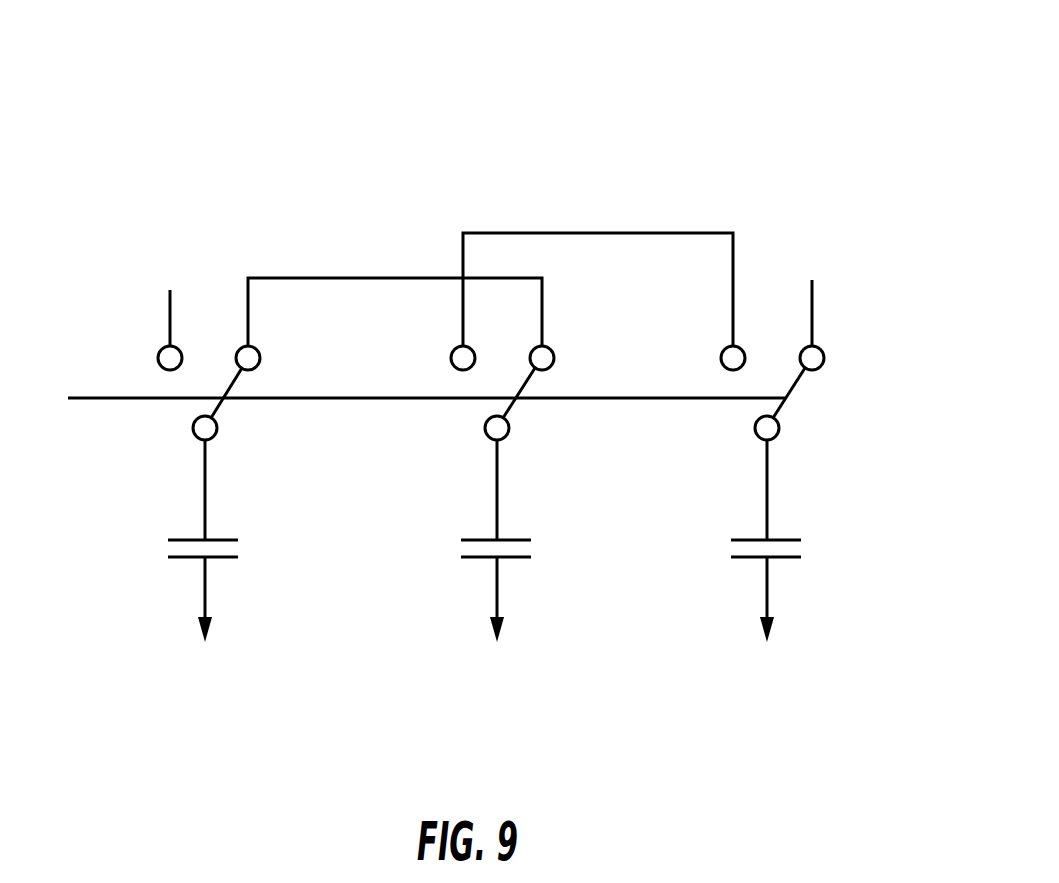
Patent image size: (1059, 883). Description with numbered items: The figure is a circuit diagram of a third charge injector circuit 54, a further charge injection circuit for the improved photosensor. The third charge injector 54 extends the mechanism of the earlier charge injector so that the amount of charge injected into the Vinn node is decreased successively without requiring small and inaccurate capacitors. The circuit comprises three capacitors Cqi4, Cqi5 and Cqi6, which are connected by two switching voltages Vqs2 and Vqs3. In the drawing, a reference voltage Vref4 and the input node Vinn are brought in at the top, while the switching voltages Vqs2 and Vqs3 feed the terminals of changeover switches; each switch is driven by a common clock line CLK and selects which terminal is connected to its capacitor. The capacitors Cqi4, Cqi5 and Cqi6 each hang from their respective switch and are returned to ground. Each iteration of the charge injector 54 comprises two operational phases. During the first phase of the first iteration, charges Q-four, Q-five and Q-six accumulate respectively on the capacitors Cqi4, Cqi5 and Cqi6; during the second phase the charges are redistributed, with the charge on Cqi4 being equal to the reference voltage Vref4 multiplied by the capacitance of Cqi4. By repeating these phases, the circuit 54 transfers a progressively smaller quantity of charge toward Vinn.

The third charge injector circuit 54 is at (784, 160).
The element CLK is at (413, 404).
The reference voltage Vref4 is at (141, 310).
The switching voltage Vqs2 is at (395, 299).
The switching voltage Vqs3 is at (598, 277).
The Vinn node Vinn is at (842, 325).
The capacitor Cqi4 is at (223, 541).
The capacitor Cqi5 is at (515, 541).
The capacitor Cqi6 is at (785, 541).